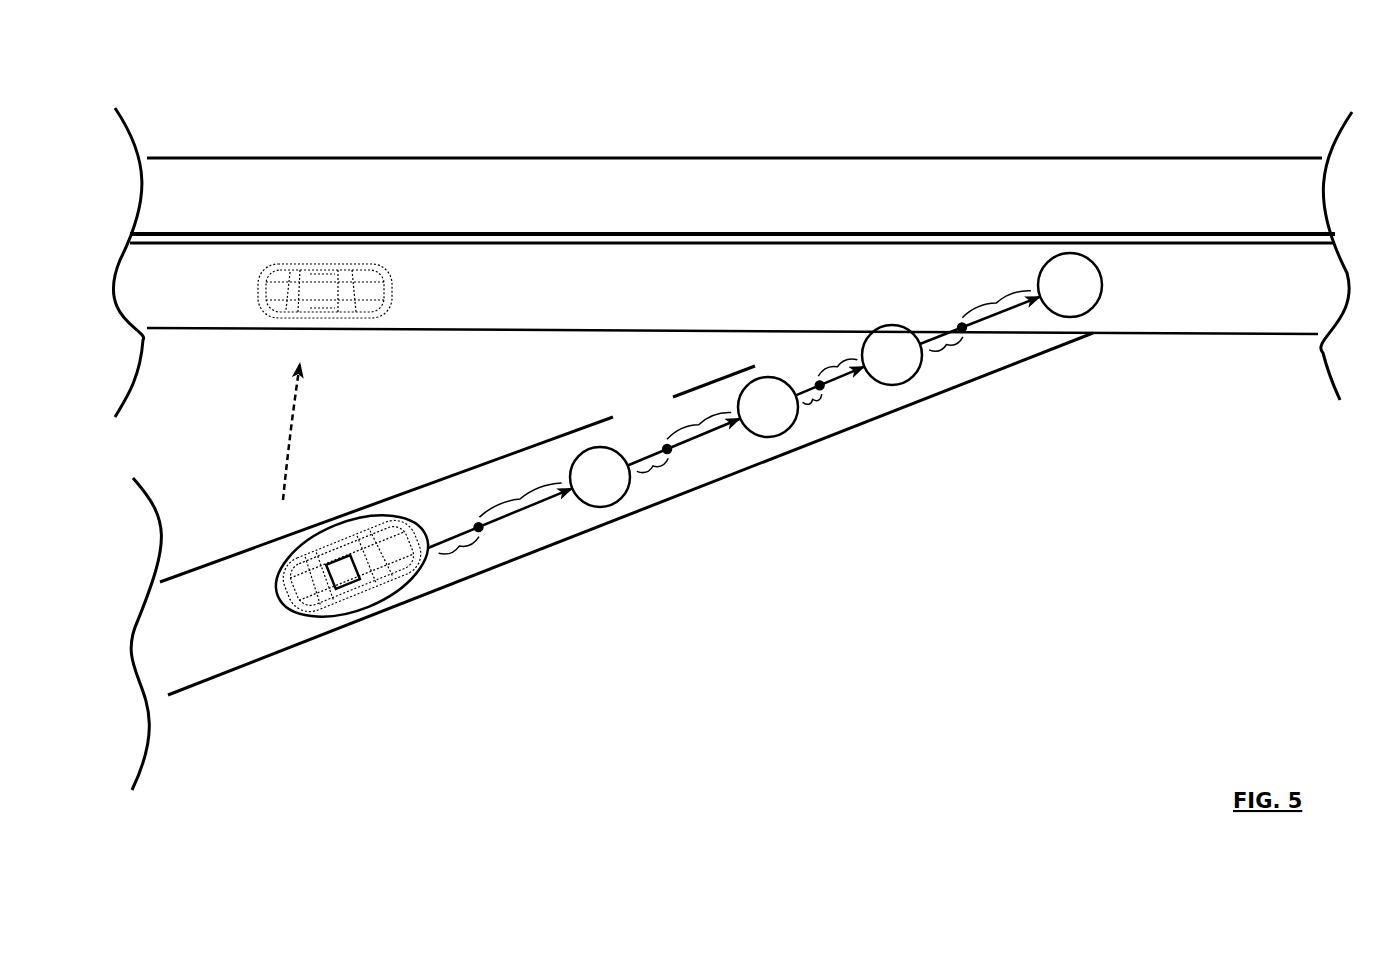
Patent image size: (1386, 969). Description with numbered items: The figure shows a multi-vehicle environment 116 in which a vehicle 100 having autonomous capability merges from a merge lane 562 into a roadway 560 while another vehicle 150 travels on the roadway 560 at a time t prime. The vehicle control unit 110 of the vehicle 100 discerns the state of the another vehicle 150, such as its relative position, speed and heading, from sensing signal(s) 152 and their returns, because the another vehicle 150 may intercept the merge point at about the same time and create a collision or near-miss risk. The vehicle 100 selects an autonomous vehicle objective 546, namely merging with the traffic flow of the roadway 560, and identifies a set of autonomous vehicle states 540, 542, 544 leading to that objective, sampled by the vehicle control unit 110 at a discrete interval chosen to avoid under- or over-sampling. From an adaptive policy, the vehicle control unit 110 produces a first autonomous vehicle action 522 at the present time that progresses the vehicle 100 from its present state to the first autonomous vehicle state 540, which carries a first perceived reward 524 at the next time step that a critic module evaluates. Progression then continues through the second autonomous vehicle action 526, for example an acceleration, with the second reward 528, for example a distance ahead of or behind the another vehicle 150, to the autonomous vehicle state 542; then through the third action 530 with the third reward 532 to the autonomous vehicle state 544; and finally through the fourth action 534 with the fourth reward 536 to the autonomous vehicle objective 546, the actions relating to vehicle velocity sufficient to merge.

The vehicle 100 is at (390, 603).
The vehicle control unit 110 is at (330, 578).
The multi-vehicle environment 116 is at (1273, 844).
The another vehicle 150 is at (327, 260).
The sensing signal(s) 152 is at (300, 421).
The autonomous vehicle action(t) 522 is at (457, 557).
The reward(t+1) 524 is at (513, 475).
The autonomous vehicle action(t+1) 526 is at (660, 483).
The reward(t+2) 528 is at (700, 407).
The autonomous vehicle action(t+2) 530 is at (818, 422).
The reward(t+3) 532 is at (857, 364).
The action(t+3) 534 is at (947, 368).
The reward(t+4) 536 is at (1040, 295).
The autonomous vehicle state 540 is at (620, 502).
The autonomous vehicle state 542 is at (790, 437).
The autonomous vehicle state 544 is at (922, 375).
The autonomous vehicle objective 546 is at (1078, 317).
The roadway 560 is at (1087, 157).
The merge lane 562 is at (313, 645).